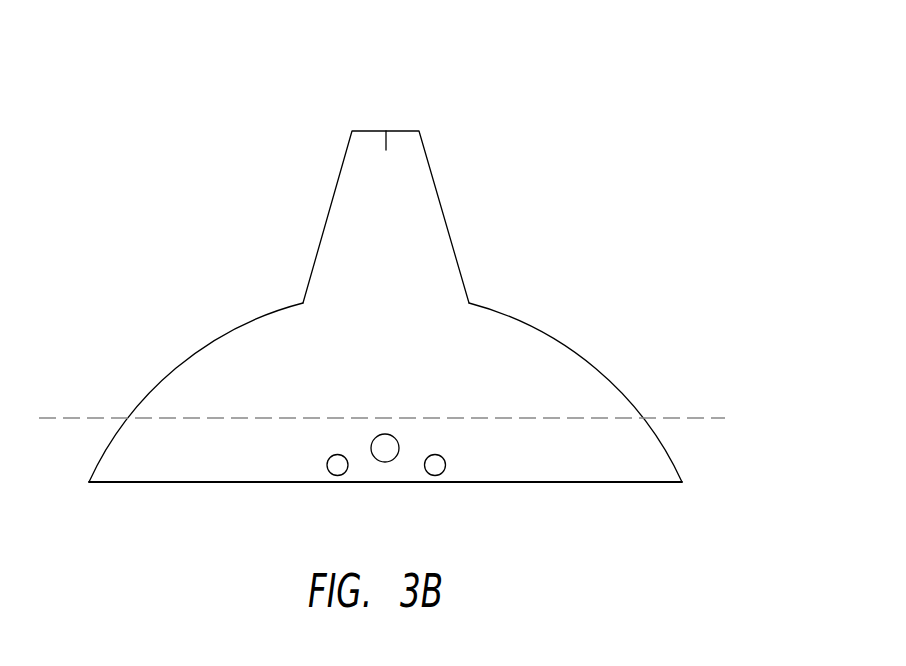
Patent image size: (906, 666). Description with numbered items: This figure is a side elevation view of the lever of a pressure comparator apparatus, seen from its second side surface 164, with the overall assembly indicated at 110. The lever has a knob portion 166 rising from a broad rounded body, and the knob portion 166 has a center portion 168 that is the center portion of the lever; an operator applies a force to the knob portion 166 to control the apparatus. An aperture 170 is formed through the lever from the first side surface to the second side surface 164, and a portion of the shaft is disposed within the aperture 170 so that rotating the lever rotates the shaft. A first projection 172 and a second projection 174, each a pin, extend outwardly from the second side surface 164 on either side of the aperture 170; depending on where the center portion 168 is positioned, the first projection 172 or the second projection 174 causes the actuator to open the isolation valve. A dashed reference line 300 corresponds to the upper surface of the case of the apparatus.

The light fixture 110 is at (624, 43).
The second side surface 164 is at (598, 380).
The knob portion 166 is at (363, 159).
The center portion 168 is at (386, 139).
The aperture 170 is at (386, 450).
The first projection 172 is at (337, 466).
The second projection 174 is at (434, 466).
The reference line 300 is at (727, 418).